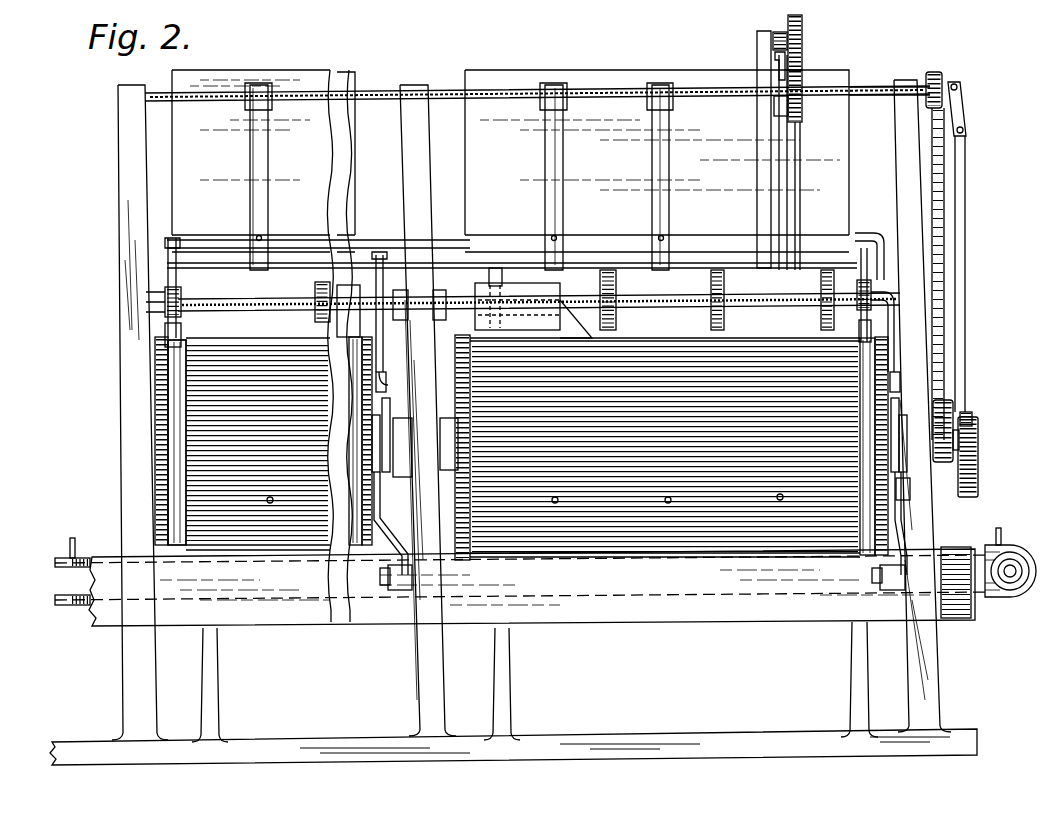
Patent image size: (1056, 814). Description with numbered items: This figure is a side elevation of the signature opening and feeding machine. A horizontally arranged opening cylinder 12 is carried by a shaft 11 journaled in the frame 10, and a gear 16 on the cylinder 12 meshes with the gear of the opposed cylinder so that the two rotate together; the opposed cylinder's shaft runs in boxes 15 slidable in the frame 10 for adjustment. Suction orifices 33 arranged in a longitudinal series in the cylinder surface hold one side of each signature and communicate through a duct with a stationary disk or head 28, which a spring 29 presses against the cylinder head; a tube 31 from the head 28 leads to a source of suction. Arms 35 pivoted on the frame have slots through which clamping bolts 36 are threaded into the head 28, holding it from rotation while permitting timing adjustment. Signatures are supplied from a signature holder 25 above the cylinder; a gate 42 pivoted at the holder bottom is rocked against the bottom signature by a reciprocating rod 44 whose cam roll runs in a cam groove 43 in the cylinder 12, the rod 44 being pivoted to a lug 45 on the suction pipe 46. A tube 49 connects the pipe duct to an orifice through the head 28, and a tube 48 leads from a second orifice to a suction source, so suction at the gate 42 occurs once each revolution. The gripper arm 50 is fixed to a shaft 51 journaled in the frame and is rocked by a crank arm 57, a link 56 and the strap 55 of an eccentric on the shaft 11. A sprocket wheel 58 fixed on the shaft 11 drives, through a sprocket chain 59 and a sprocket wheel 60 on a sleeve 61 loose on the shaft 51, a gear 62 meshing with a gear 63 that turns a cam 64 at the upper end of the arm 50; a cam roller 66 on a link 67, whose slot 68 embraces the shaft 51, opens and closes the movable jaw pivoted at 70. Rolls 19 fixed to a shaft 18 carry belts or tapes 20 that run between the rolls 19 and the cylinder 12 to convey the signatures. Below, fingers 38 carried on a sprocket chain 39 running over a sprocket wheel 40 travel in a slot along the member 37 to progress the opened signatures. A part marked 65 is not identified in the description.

The frame 10 is at (124, 200).
The shaft 11 is at (969, 414).
The cylinder 12 is at (682, 338).
The boxes 15 is at (404, 420).
The gear 16 is at (153, 373).
The shaft 18 is at (658, 298).
The rolls 19 is at (316, 288).
The belts or tapes 20 is at (533, 309).
The signature holder 25 is at (597, 72).
The disk or head 28 is at (346, 443).
The spring 29 is at (380, 490).
The tube 31 is at (386, 410).
The suction orifices 33 is at (270, 497).
The arms 35 is at (398, 538).
The clamping bolt 36 is at (906, 487).
The member 37 is at (605, 614).
The fingers 38 is at (86, 542).
The sprocket chain 39 is at (80, 598).
The sprocket wheel 40 is at (1016, 556).
The gate 42 is at (293, 242).
The cam groove 43 is at (178, 454).
The reciprocating rod 44 is at (166, 320).
The lug 45 is at (166, 253).
The suction pipe 46 is at (437, 242).
The tube 48 is at (384, 384).
The tube 49 is at (381, 360).
The arm 50 is at (252, 164).
The shaft 51 is at (455, 90).
The strap 55 is at (979, 470).
The link 56 is at (963, 206).
The crank arm 57 is at (957, 116).
The sprocket wheel 58 is at (940, 458).
The sprocket chain 59 is at (800, 268).
The sprocket wheel 60 is at (931, 74).
The sleeve 61 is at (880, 86).
The gear 62 is at (802, 110).
The gear 63 is at (802, 44).
The cam 64 is at (780, 32).
The frame bar 65 is at (758, 73).
The cam roller 66 is at (778, 62).
The link 67 is at (790, 153).
The slot 68 is at (783, 105).
The pivot 70 is at (552, 300).